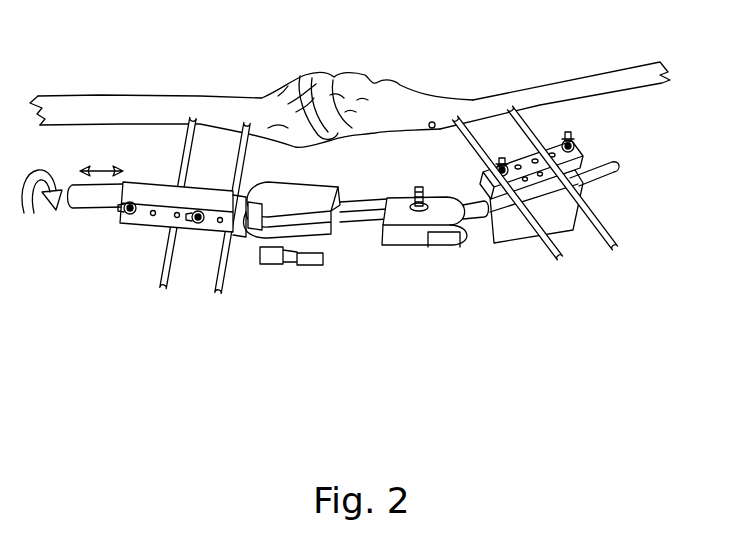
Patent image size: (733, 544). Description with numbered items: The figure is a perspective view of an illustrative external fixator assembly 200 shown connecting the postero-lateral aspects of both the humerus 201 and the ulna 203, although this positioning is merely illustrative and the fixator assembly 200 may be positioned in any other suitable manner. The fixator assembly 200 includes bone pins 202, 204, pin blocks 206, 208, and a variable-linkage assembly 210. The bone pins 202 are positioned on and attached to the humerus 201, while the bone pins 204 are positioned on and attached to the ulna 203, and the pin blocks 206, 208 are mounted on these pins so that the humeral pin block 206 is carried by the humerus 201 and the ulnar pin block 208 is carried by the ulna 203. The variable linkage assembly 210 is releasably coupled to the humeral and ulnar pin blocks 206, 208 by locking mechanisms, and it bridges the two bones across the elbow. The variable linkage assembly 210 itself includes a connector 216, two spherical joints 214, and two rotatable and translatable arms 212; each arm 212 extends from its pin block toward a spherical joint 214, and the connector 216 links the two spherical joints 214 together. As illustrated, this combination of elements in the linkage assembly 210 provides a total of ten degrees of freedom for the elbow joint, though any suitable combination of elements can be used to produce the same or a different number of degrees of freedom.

The external fixator assembly 200 is at (511, 352).
The humerus 201 is at (160, 97).
The bone pins 202 is at (160, 275).
The ulna 203 is at (610, 80).
The bone pins 204 is at (618, 242).
The pin block 206 is at (143, 224).
The pin block 208 is at (533, 185).
The variable-linkage assembly 210 is at (414, 296).
The rotatable and translatable arms 212 is at (585, 190).
The spherical joints 214 is at (258, 225).
The connector 216 is at (365, 233).